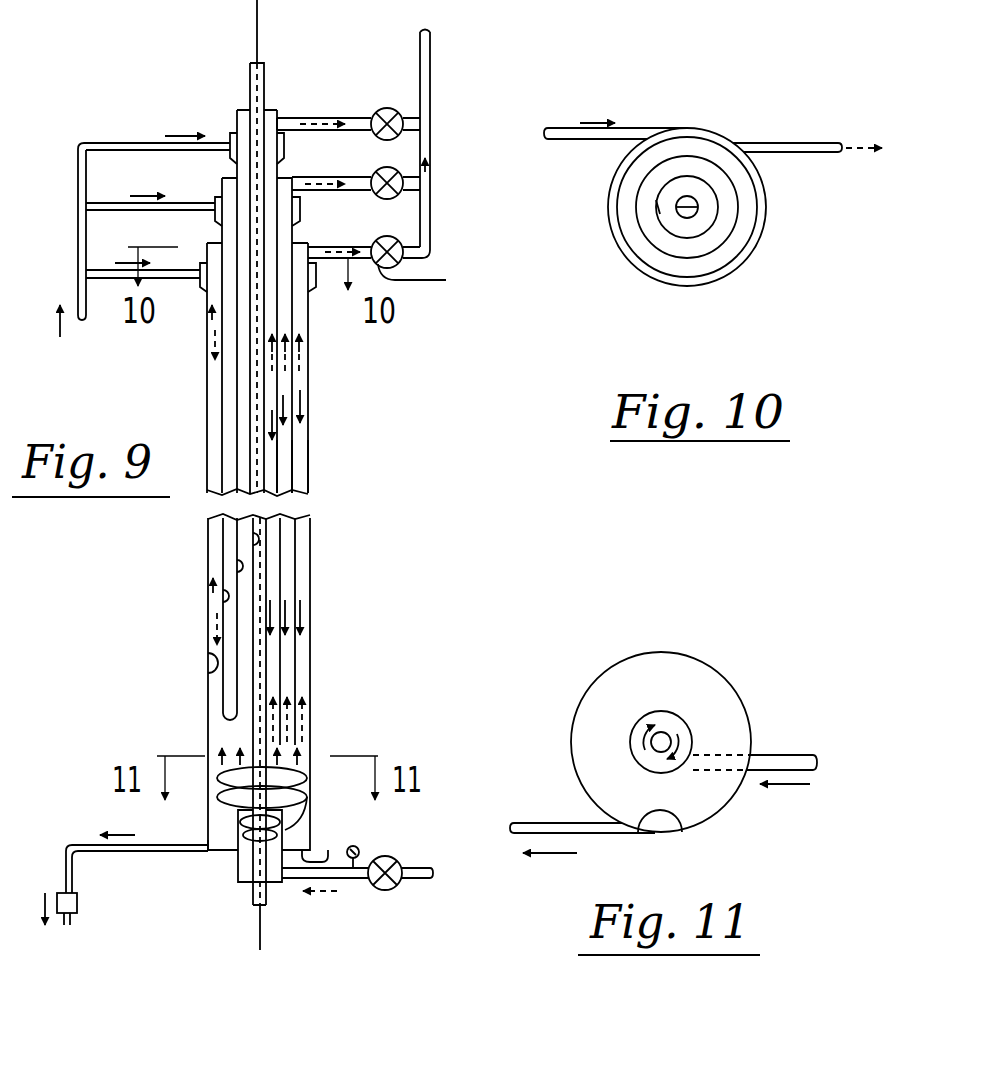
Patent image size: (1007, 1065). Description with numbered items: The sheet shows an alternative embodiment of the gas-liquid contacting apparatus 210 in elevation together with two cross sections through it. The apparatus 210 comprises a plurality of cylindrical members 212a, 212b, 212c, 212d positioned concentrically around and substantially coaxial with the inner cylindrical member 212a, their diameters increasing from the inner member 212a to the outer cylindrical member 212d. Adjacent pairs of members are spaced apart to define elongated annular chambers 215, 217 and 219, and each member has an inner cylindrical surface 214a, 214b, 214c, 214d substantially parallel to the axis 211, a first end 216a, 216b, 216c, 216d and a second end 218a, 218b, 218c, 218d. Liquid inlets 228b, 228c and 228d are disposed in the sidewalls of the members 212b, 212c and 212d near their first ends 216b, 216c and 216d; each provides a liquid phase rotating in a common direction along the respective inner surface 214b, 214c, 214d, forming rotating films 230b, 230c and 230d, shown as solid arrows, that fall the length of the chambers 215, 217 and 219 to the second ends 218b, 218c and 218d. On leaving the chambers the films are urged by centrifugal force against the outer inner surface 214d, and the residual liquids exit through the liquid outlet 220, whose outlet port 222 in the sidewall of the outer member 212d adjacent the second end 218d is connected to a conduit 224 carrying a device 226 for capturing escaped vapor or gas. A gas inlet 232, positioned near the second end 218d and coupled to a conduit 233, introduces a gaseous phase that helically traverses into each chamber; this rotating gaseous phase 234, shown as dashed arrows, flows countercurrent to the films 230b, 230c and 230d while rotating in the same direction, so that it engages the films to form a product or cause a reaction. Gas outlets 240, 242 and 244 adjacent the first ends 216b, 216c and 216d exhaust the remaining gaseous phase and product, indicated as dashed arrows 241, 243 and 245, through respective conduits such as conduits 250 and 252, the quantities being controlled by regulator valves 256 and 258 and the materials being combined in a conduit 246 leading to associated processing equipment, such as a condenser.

In FIG. 9, the apparatus 210 is at (437, 417).
In FIG. 9, the axis 211 is at (260, 13).
In FIG. 9, the inner cylindrical member 212a is at (265, 553).
In FIG. 10, the inner cylindrical member 212a is at (692, 215).
In FIG. 9, the cylindrical member 212b is at (280, 578).
In FIG. 10, the cylindrical member 212b is at (710, 227).
In FIG. 9, the cylindrical member 212c is at (296, 665).
In FIG. 10, the cylindrical member 212c is at (740, 210).
In FIG. 9, the outer cylindrical member 212d is at (312, 681).
In FIG. 10, the outer cylindrical member 212d is at (697, 283).
In FIG. 9, the inner cylindrical surface 214a is at (252, 550).
In FIG. 9, the inner cylindrical surface 214b is at (237, 572).
In FIG. 9, the inner cylindrical surface 214c is at (223, 602).
In FIG. 9, the inner cylindrical surface 214d is at (208, 660).
In FIG. 9, the elongated annular chamber 215 is at (285, 473).
In FIG. 10, the elongated annular chamber 215 is at (668, 200).
In FIG. 9, the first end 216a is at (251, 63).
In FIG. 9, the first end 216b is at (242, 110).
In FIG. 9, the first end 216c is at (234, 178).
In FIG. 9, the first end 216d is at (214, 243).
In FIG. 9, the elongated annular chamber 217 is at (298, 486).
In FIG. 10, the elongated annular chamber 217 is at (645, 207).
In FIG. 9, the second end 218a is at (264, 906).
In FIG. 9, the second end 218b is at (226, 720).
In FIG. 9, the second end 218c is at (215, 718).
In FIG. 9, the second end 218d is at (325, 852).
In FIG. 9, the elongated annular chamber 219 is at (303, 497).
In FIG. 10, the elongated annular chamber 219 is at (636, 246).
In FIG. 9, the liquid outlet 220 is at (206, 842).
In FIG. 11, the liquid outlet 220 is at (628, 832).
In FIG. 9, the liquid outlet port 222 is at (215, 851).
In FIG. 11, the liquid outlet port 222 is at (681, 823).
In FIG. 9, the conduit 224 is at (102, 843).
In FIG. 9, the device for capturing escaped vapor or gas 226 is at (77, 908).
In FIG. 9, the liquid inlet 228b is at (230, 142).
In FIG. 9, the liquid inlet 228c is at (214, 205).
In FIG. 9, the liquid inlet 228d is at (198, 279).
In FIG. 10, the liquid inlet 228d is at (660, 284).
In FIG. 9, the rotating film 230b is at (271, 448).
In FIG. 9, the rotating film 230c is at (284, 437).
In FIG. 9, the rotating film 230d is at (301, 411).
In FIG. 9, the gas inlet 232 is at (236, 874).
In FIG. 11, the gas inlet 232 is at (637, 765).
In FIG. 9, the conduit 233 is at (355, 880).
In FIG. 11, the conduit 233 is at (773, 755).
In FIG. 9, the rotating gaseous phase 234 is at (273, 342).
In FIG. 11, the rotating gaseous phase 234 is at (640, 748).
In FIG. 9, the gas outlet 240 is at (280, 120).
In FIG. 9, the exhausted materials 241 is at (323, 119).
In FIG. 9, the gas outlet 242 is at (287, 165).
In FIG. 9, the exhausted materials 243 is at (312, 186).
In FIG. 9, the gas outlet 244 is at (313, 247).
In FIG. 9, the exhausted materials 245 is at (331, 259).
In FIG. 10, the exhausted materials 245 is at (852, 153).
In FIG. 9, the conduit 246 is at (429, 47).
In FIG. 9, the conduit 250 is at (305, 194).
In FIG. 9, the conduit 252 is at (446, 280).
In FIG. 9, the regulator valve 256 is at (398, 197).
In FIG. 9, the regulator valve 258 is at (425, 266).